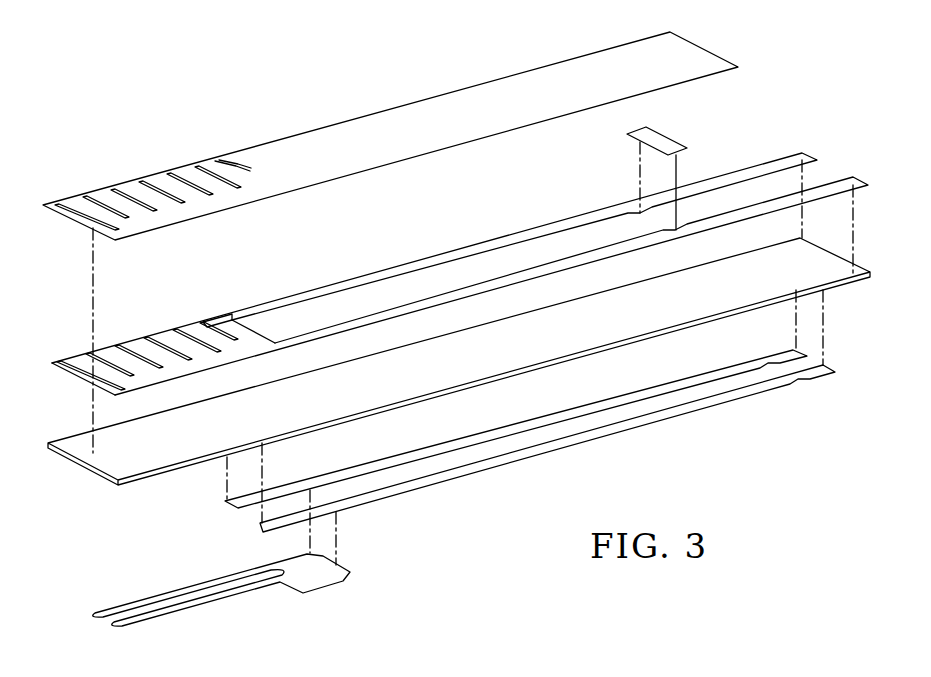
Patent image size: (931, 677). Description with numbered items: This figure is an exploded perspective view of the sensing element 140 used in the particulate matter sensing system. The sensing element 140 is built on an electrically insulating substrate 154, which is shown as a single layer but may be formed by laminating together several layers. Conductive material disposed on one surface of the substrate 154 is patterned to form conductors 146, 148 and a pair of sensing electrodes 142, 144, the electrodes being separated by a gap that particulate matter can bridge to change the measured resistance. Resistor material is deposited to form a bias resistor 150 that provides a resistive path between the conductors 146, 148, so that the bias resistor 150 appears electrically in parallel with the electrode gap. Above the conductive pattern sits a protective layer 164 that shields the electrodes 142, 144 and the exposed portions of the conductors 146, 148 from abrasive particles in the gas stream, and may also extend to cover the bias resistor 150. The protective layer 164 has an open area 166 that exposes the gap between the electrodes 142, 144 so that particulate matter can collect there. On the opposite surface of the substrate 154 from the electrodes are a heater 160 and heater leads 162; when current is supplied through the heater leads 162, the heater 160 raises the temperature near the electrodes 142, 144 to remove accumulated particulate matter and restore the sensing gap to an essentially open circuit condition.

The sensing element 140 is at (135, 120).
The electrode 142 is at (203, 345).
The electrode 144 is at (150, 338).
The conductor 146 is at (698, 185).
The conductor 148 is at (750, 210).
The bias resistor 150 is at (668, 148).
The substrate 154 is at (70, 443).
The heater 160 is at (121, 608).
The heater leads 162 is at (620, 395).
The protective layer 164 is at (238, 165).
The open area 166 is at (103, 213).